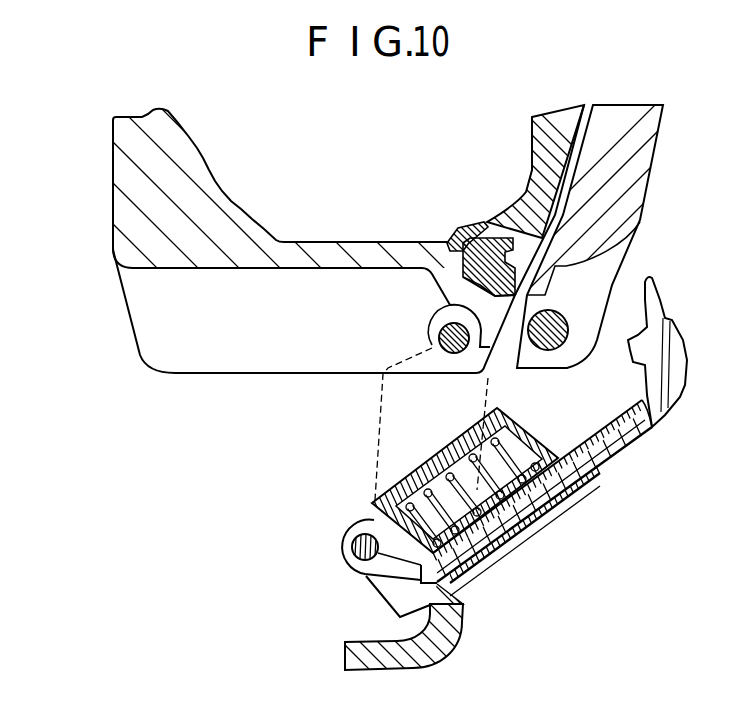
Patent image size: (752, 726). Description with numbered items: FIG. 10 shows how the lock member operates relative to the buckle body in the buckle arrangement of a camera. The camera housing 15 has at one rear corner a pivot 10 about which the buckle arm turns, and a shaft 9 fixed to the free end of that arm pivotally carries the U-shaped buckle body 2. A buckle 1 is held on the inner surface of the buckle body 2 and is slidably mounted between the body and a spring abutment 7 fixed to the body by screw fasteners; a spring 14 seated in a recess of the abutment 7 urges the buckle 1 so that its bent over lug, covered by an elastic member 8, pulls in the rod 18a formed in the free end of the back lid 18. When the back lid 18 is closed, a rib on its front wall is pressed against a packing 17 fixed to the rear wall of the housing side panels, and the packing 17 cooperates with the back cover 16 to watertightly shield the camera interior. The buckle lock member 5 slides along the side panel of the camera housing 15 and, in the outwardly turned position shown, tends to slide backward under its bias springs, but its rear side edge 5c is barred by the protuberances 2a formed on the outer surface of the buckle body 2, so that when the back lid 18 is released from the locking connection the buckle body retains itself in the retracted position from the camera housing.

The buckle 1 is at (590, 440).
The buckle body 2 is at (380, 586).
The protuberances 2a is at (398, 622).
The buckle lock member 5 is at (430, 664).
The rear side edge 5c is at (458, 596).
The spring abutment 7 is at (549, 440).
The elastic member 8 is at (668, 345).
The shaft 9 is at (352, 546).
The pivot 10 is at (438, 337).
The spring 14 is at (523, 541).
The camera housing 15 is at (108, 190).
The back cover 16 is at (530, 176).
The packing 17 is at (470, 226).
The back lid 18 is at (658, 184).
The rod 18a is at (558, 323).